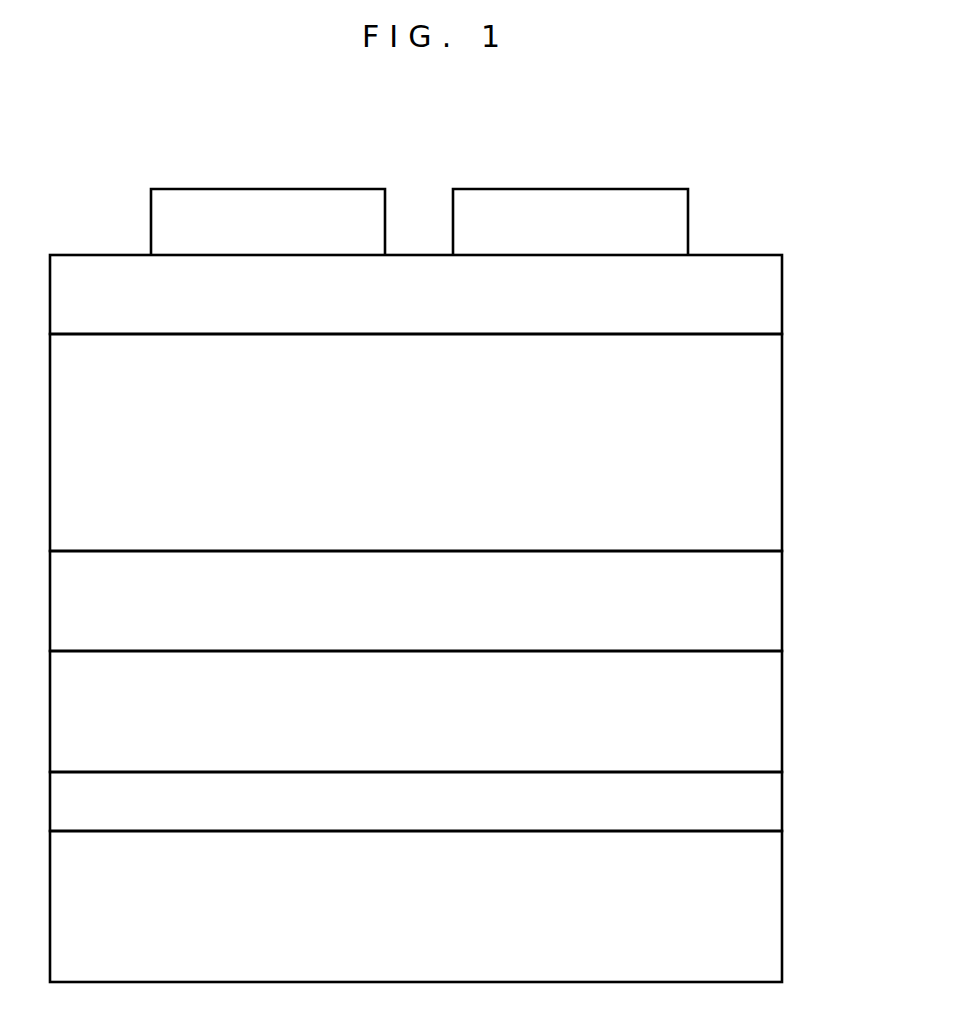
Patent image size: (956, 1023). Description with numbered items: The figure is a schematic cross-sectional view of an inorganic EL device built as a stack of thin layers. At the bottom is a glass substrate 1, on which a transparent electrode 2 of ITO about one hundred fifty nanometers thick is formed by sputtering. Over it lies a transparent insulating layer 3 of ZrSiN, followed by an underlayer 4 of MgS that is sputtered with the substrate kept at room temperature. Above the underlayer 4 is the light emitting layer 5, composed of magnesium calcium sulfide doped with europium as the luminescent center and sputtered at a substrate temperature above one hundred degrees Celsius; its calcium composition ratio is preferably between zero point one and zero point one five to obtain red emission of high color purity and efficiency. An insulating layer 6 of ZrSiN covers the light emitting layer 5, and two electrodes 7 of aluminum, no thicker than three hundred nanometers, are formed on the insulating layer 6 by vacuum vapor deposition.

The glass substrate 1 is at (748, 931).
The transparent electrode 2 is at (748, 802).
The transparent insulating layer 3 is at (748, 706).
The underlayer 4 is at (748, 593).
The light emitting layer 5 is at (748, 436).
The insulating layer 6 is at (748, 287).
The electrodes 7 is at (290, 208).